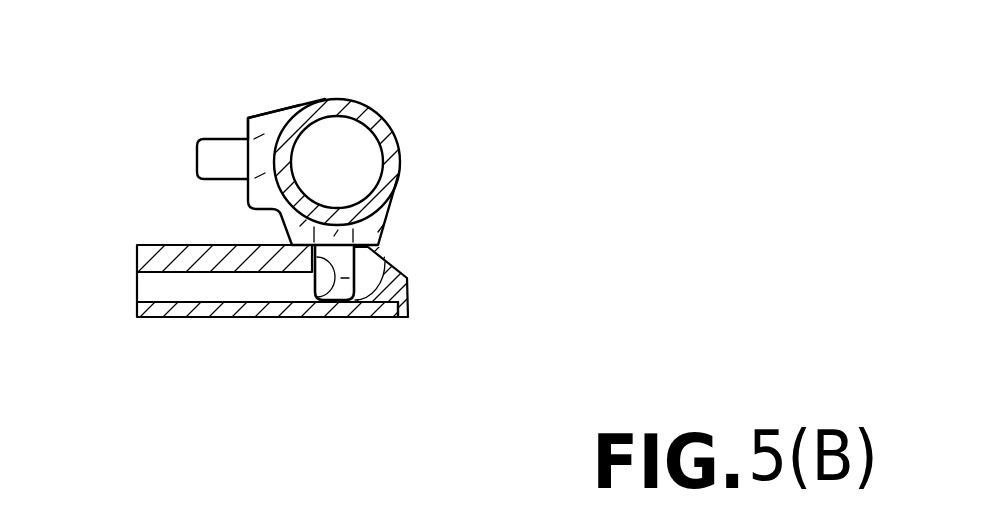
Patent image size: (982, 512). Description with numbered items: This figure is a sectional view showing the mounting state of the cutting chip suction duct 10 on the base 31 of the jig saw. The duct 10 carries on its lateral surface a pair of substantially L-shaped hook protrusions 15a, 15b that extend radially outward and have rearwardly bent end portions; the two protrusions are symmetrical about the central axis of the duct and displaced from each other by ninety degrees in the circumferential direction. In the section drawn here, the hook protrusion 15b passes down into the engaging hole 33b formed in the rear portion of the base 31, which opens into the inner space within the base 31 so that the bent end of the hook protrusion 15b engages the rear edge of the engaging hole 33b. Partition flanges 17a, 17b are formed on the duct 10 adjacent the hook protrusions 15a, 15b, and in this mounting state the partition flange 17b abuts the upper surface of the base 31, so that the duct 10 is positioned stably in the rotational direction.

The cutting chip suction duct 10 is at (384, 110).
The hook protrusion 15a is at (217, 157).
The hook protrusion 15b is at (386, 262).
The partition flange 17a is at (251, 122).
The partition flange 17b is at (296, 226).
The base 31 is at (170, 247).
The engaging hole 33b is at (322, 302).